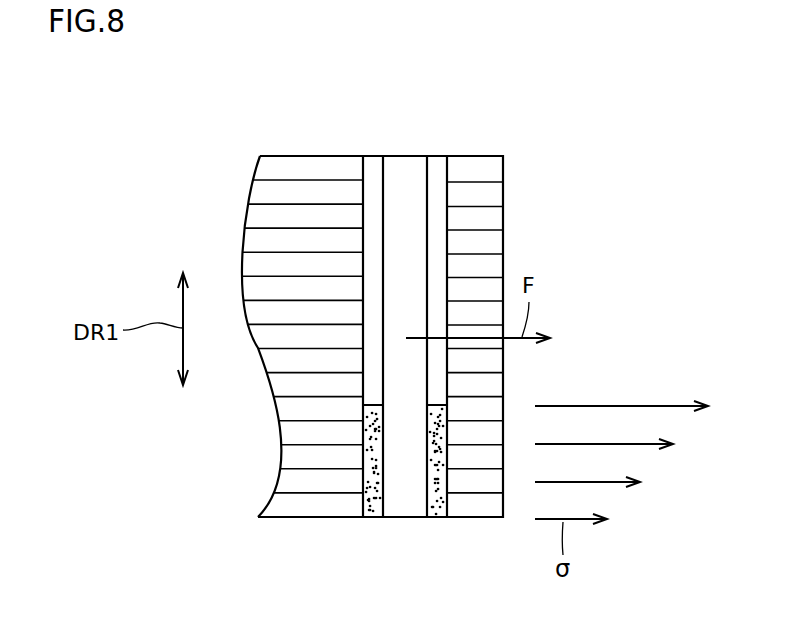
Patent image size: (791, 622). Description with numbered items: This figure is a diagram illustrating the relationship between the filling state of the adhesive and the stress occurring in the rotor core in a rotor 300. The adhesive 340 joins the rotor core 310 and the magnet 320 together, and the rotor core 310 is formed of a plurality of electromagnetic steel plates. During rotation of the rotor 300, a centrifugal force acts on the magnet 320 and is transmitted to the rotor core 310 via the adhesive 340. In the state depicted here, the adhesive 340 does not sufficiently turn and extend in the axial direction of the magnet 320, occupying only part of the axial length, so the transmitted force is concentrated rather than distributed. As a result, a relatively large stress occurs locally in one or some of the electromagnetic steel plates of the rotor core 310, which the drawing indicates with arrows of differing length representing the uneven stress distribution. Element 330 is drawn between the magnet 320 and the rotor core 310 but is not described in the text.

The display panel assembly 300 is at (231, 121).
The first substrate 310 is at (323, 178).
The gap layer 320 is at (406, 178).
The second substrate 330 is at (440, 178).
The sealing member 340 is at (440, 490).